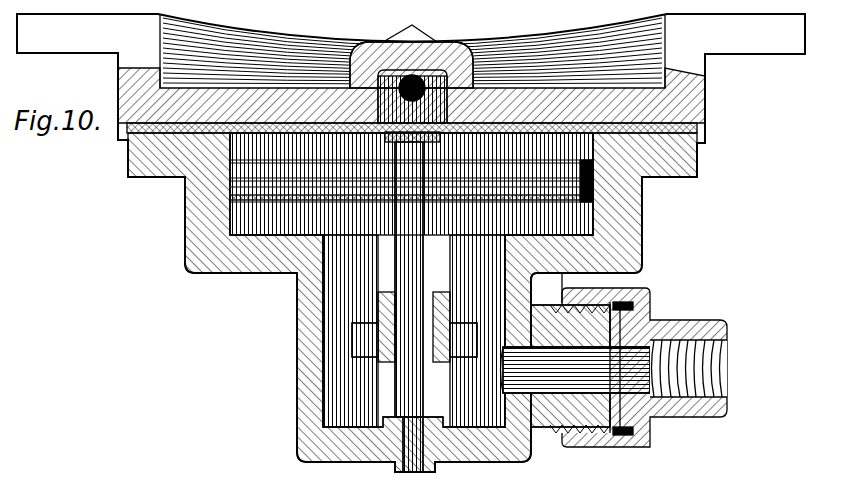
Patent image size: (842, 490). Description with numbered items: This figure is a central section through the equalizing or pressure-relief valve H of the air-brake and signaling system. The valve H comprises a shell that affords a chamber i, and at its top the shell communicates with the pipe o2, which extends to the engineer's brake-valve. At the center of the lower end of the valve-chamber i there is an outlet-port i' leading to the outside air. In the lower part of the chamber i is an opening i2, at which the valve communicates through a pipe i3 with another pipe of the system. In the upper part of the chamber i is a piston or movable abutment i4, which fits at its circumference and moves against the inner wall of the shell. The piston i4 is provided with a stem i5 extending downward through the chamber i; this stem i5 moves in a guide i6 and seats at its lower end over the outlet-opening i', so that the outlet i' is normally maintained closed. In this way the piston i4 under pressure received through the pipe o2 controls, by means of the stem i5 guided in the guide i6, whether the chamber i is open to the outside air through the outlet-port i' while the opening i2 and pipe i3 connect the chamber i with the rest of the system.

The equalizing or pressure-relief valve H is at (411, 243).
The pipe o2 is at (457, 42).
The piston or movable abutment i4 is at (333, 173).
The chamber i is at (426, 274).
The stem i5 is at (415, 302).
The guide i6 is at (380, 300).
The outlet-port i' is at (440, 453).
The opening i2 is at (542, 427).
The pipe i3 is at (644, 367).